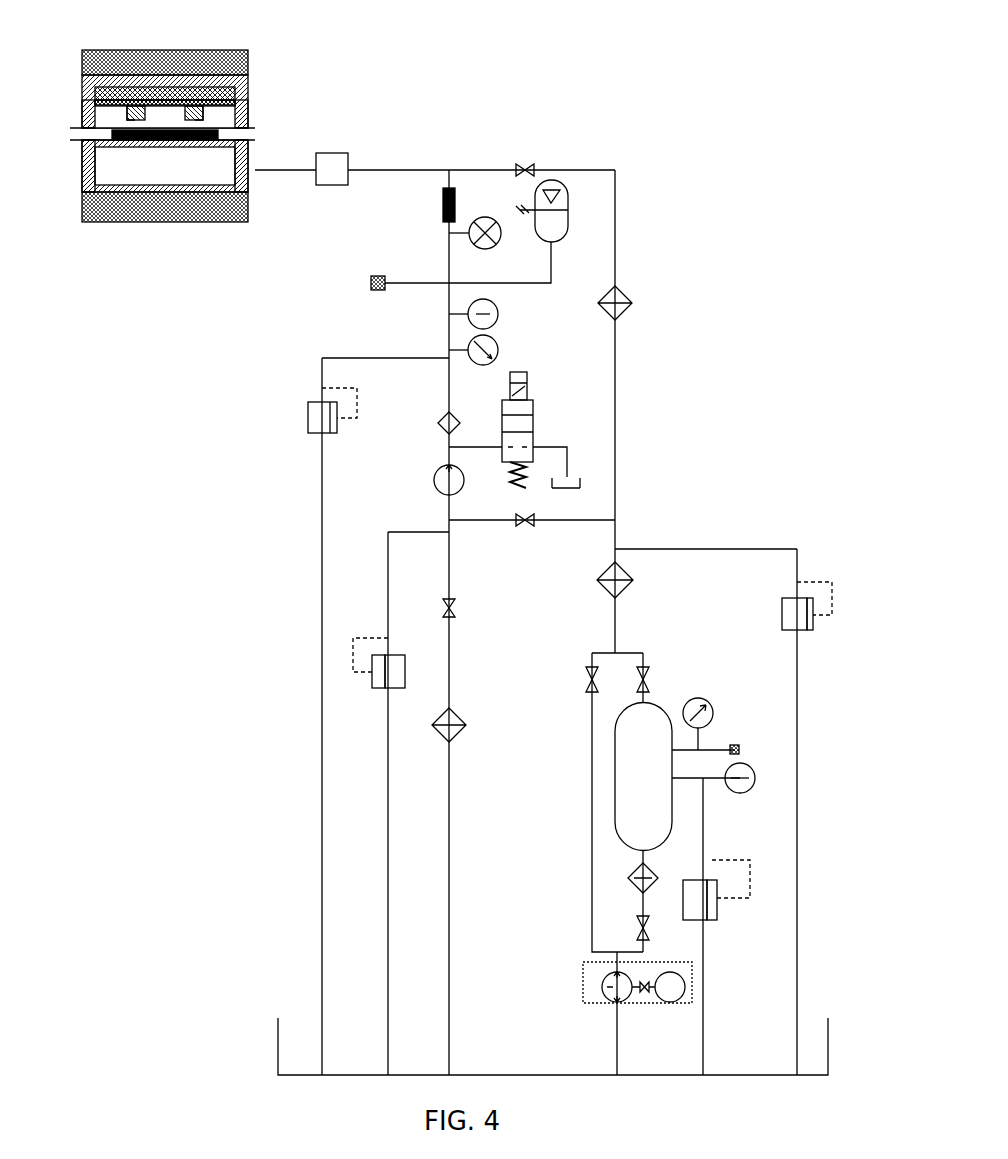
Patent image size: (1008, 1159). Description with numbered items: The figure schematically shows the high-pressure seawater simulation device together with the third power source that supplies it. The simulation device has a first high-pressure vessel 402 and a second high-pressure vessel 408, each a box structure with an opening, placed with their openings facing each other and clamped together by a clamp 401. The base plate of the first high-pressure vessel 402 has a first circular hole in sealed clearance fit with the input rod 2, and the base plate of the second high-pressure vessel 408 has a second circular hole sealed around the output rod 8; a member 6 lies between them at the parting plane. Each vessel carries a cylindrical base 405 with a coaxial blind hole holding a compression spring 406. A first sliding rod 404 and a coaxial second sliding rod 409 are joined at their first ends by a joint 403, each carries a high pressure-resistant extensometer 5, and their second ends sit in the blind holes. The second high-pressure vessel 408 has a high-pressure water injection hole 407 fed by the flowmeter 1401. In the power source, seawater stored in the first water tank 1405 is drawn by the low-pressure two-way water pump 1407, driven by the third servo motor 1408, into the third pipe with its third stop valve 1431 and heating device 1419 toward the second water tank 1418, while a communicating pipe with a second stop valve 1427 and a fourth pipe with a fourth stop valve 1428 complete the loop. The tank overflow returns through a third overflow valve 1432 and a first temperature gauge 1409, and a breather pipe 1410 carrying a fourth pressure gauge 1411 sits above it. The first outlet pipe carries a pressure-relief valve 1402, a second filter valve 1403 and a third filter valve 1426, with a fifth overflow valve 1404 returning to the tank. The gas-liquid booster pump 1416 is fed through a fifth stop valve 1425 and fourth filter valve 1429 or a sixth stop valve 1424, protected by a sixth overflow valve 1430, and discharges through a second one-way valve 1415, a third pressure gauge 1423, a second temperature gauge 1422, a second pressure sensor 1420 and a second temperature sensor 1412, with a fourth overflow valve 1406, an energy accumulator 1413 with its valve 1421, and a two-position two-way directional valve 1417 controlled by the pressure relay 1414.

The clamp 401 is at (88, 65).
The first high-pressure vessel 402 is at (122, 70).
The high pressure-resistant extensometer 5 is at (140, 93).
The joint 403 is at (163, 95).
The first sliding rod 404 is at (200, 95).
The cylindrical base 405 is at (225, 90).
The compression spring 406 is at (233, 95).
The second high-pressure vessel 408 is at (247, 100).
The second sliding rod 409 is at (122, 98).
The input rod 2 is at (98, 143).
The workpiece sheet 6 is at (160, 140).
The output rod 8 is at (220, 142).
The high-pressure water injection hole 407 is at (240, 167).
The flowmeter 1401 is at (332, 153).
The pressure-relief valve 1402 is at (527, 165).
The second filter valve 1403 is at (632, 303).
The fifth overflow valve 1404 is at (813, 625).
The first water tank 1405 is at (828, 1048).
The fourth overflow valve 1406 is at (308, 402).
The low-pressure 2-way water pump 1407 is at (605, 985).
The third servo motor 1408 is at (657, 983).
The first temperature gauge 1409 is at (755, 766).
The breather pipe 1410 is at (739, 748).
The fourth pressure gauge 1411 is at (713, 720).
The second temperature sensor 1412 is at (455, 210).
The energy accumulator 1413 is at (563, 235).
The pressure relay 1414 is at (352, 287).
The second one-way valve 1415 is at (437, 431).
The gas-liquid booster pump 1416 is at (434, 486).
The third 2-position 2-way directional valve 1417 is at (533, 420).
The second water tank 1418 is at (615, 785).
The heating device 1419 is at (632, 880).
The second pressure sensor 1420 is at (477, 242).
The accumulator inlet valve 1421 is at (520, 213).
The second temperature gauge 1422 is at (500, 314).
The third pressure gauge 1423 is at (500, 350).
The sixth stop valve 1424 is at (525, 536).
The fifth stop valve 1425 is at (455, 608).
The third filter valve 1426 is at (633, 580).
The second stop valve 1427 is at (586, 682).
The fourth stop valve 1428 is at (649, 680).
The fourth filter valve 1429 is at (466, 725).
The sixth overflow valve 1430 is at (388, 653).
The third stop valve 1431 is at (637, 930).
The third overflow valve 1432 is at (723, 912).